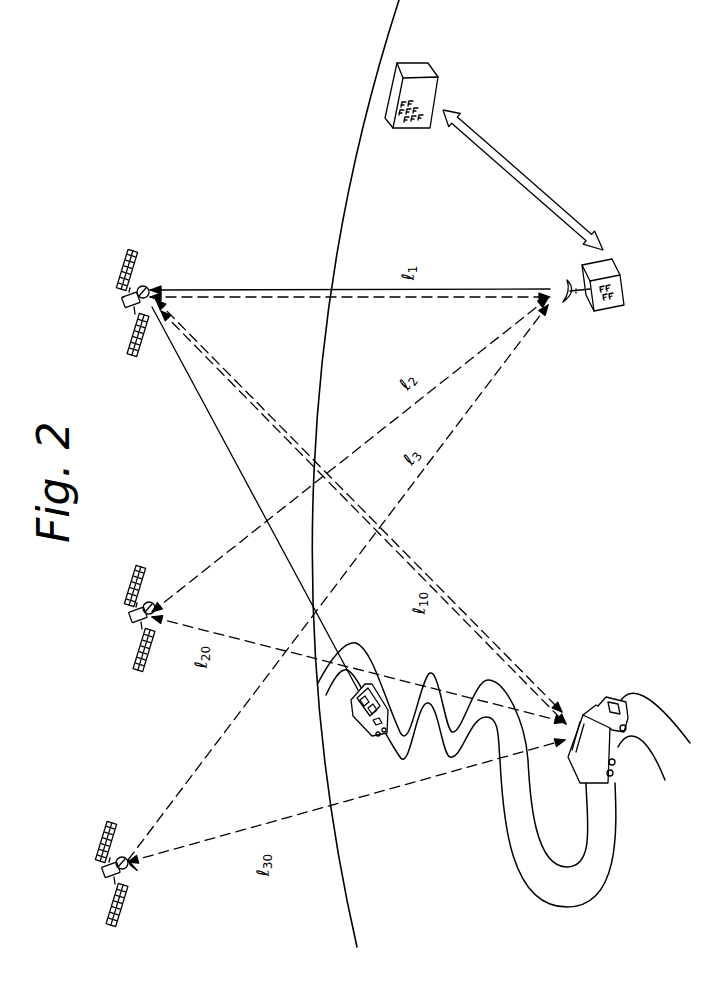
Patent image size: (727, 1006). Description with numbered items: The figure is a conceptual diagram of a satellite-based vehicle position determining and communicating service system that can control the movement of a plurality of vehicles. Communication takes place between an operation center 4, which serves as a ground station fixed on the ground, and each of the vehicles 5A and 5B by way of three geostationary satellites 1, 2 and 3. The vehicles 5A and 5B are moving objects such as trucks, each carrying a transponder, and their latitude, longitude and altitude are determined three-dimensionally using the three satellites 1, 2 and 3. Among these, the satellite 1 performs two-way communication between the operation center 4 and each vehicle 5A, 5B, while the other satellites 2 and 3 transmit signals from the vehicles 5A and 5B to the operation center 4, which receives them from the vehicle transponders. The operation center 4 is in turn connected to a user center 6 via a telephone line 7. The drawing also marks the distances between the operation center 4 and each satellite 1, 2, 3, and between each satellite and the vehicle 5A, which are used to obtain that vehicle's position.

The geostationary satellite 1 is at (123, 298).
The geostationary satellite 2 is at (131, 617).
The geostationary satellite 3 is at (104, 872).
The operation center 4 is at (600, 308).
The vehicle 5A is at (578, 715).
The vehicle 5B is at (356, 718).
The user center 6 is at (411, 63).
The telephone line 7 is at (518, 165).